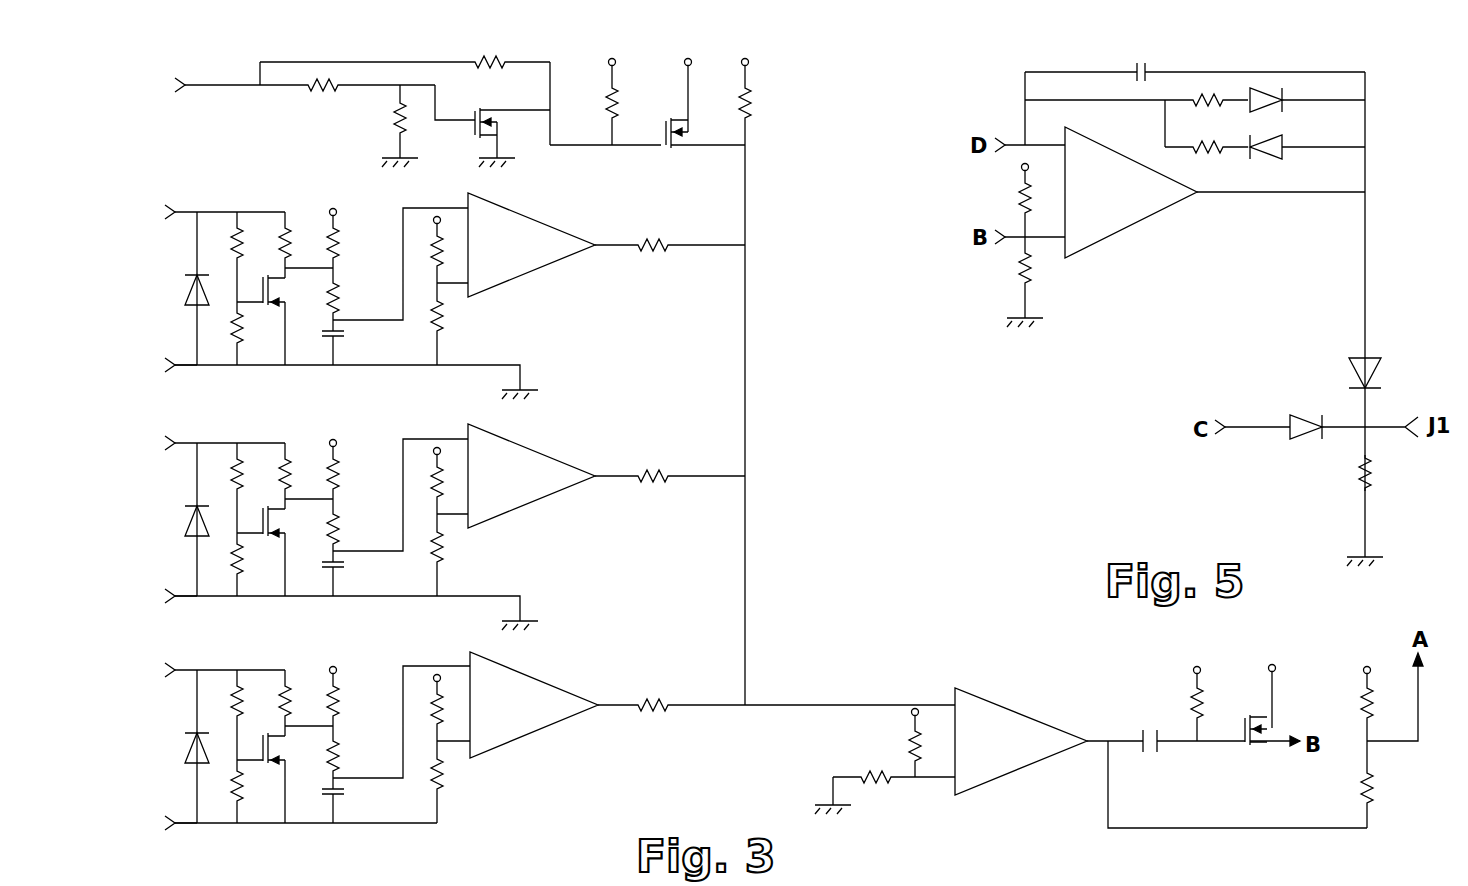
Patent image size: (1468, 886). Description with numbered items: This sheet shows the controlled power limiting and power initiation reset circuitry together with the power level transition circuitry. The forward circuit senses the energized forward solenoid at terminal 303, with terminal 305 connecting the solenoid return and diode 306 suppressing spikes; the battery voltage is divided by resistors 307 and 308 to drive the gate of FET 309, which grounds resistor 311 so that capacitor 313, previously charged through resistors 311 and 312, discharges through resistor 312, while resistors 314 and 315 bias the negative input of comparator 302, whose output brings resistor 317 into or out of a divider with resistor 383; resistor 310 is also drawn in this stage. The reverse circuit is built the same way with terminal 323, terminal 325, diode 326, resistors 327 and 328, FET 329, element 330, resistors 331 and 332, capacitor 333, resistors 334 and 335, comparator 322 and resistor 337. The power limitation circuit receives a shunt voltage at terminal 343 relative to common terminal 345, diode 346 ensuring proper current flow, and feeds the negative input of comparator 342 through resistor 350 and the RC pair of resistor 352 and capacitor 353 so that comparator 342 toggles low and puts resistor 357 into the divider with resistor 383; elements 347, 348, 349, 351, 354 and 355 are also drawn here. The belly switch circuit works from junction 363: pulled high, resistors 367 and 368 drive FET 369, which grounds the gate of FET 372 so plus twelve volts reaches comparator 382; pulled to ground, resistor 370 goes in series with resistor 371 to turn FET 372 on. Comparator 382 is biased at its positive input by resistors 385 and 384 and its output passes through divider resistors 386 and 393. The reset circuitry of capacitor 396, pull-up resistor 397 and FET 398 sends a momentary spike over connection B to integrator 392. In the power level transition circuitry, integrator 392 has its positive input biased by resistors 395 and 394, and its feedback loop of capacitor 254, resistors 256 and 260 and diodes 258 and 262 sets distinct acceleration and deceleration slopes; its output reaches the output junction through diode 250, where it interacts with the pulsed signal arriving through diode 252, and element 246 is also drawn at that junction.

In FIG. 3, the junction 363 is at (173, 87).
In FIG. 3, the resistor 367 is at (319, 94).
In FIG. 3, the resistor 368 is at (392, 118).
In FIG. 3, the FET device 369 is at (506, 145).
In FIG. 3, the resistor 370 is at (492, 61).
In FIG. 3, the resistor 371 is at (603, 102).
In FIG. 3, the FET device 372 is at (692, 129).
In FIG. 3, the resistor 383 is at (752, 102).
In FIG. 3, the terminal 303 is at (165, 213).
In FIG. 3, the terminal 305 is at (165, 366).
In FIG. 3, the diode 306 is at (185, 292).
In FIG. 3, the resistor 307 is at (238, 232).
In FIG. 3, the resistor 308 is at (232, 350).
In FIG. 3, the field effect transistor 309 is at (278, 298).
In FIG. 3, the resistor 310 is at (290, 245).
In FIG. 3, the resistor 311 is at (340, 246).
In FIG. 3, the resistor 312 is at (375, 288).
In FIG. 3, the capacitor 313 is at (340, 339).
In FIG. 3, the resistor 314 is at (439, 248).
In FIG. 3, the resistor 315 is at (443, 320).
In FIG. 3, the comparator 302 is at (532, 259).
In FIG. 3, the resistor 317 is at (654, 250).
In FIG. 3, the terminal 323 is at (200, 445).
In FIG. 3, the terminal 325 is at (156, 600).
In FIG. 3, the diode 326 is at (174, 519).
In FIG. 3, the resistor 327 is at (248, 473).
In FIG. 3, the resistor 328 is at (225, 580).
In FIG. 3, the field effect transistor 329 is at (294, 537).
In FIG. 3, the resistor 330 is at (301, 467).
In FIG. 3, the resistor 331 is at (355, 470).
In FIG. 3, the resistor 332 is at (356, 521).
In FIG. 3, the capacitor 333 is at (359, 573).
In FIG. 3, the resistor 334 is at (441, 463).
In FIG. 3, the resistor 335 is at (468, 555).
In FIG. 3, the comparator 322 is at (531, 476).
In FIG. 3, the resistor 337 is at (670, 496).
In FIG. 3, the terminal 343 is at (200, 673).
In FIG. 3, the common terminal 345 is at (156, 826).
In FIG. 3, the diode 346 is at (176, 746).
In FIG. 3, the resistor 347 is at (244, 701).
In FIG. 3, the resistor 348 is at (249, 808).
In FIG. 3, the transistor 349 is at (294, 762).
In FIG. 3, the resistor 350 is at (302, 696).
In FIG. 3, the resistor 351 is at (354, 692).
In FIG. 3, the resistor 352 is at (356, 748).
In FIG. 3, the capacitor 353 is at (357, 800).
In FIG. 3, the resistor 354 is at (428, 688).
In FIG. 3, the resistor 355 is at (468, 782).
In FIG. 3, the comparator 342 is at (534, 705).
In FIG. 3, the resistor 357 is at (671, 726).
In FIG. 3, the comparator 382 is at (1022, 754).
In FIG. 3, the resistor 384 is at (875, 782).
In FIG. 3, the resistor 385 is at (910, 746).
In FIG. 3, the resistor 386 is at (1372, 795).
In FIG. 3, the resistor 393 is at (1362, 700).
In FIG. 3, the capacitor 396 is at (1140, 736).
In FIG. 3, the pull-up resistor 397 is at (1192, 702).
In FIG. 3, the FET device 398 is at (1245, 724).
In FIG. 5, the capacitor 254 is at (1135, 60).
In FIG. 5, the resistor 256 is at (1204, 94).
In FIG. 5, the diode 258 is at (1272, 108).
In FIG. 5, the resistor 260 is at (1220, 152).
In FIG. 5, the diode 262 is at (1274, 156).
In FIG. 5, the integrator 392 is at (1129, 207).
In FIG. 5, the resistor 394 is at (1018, 265).
In FIG. 5, the resistor 395 is at (1020, 205).
In FIG. 5, the diode 250 is at (1375, 380).
In FIG. 5, the diode 252 is at (1306, 417).
In FIG. 5, the resistor 246 is at (1372, 471).